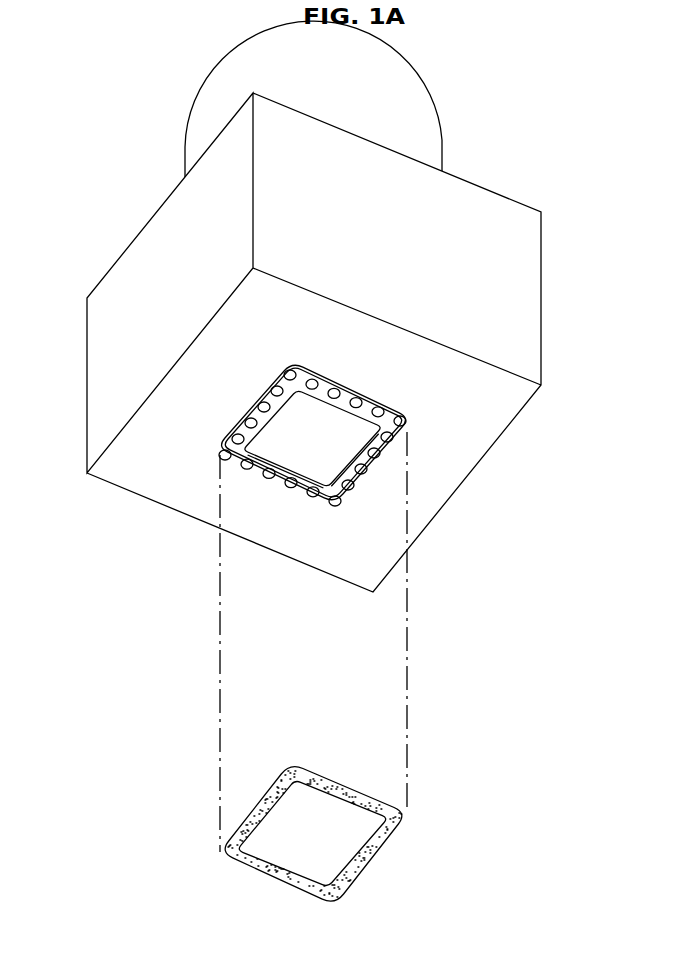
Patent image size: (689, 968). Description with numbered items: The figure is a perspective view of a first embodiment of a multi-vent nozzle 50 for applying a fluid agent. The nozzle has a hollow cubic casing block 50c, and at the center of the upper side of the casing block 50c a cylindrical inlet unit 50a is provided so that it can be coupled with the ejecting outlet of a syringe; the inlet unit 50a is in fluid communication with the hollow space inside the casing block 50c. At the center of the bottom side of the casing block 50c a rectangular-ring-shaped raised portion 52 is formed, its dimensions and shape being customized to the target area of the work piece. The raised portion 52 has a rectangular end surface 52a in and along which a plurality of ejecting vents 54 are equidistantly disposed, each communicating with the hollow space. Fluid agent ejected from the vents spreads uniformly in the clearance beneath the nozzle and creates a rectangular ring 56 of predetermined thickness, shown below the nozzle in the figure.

The multi-vent nozzle 50 is at (562, 278).
The cylindrical inlet unit 50a is at (422, 142).
The hollow cubic casing block 50c is at (102, 384).
The rectangular-ring-shaped raised portion 52 is at (266, 508).
The rectangular end surface 52a is at (325, 500).
The ejecting vents 54 is at (395, 402).
The rectangular ring 56 is at (357, 868).